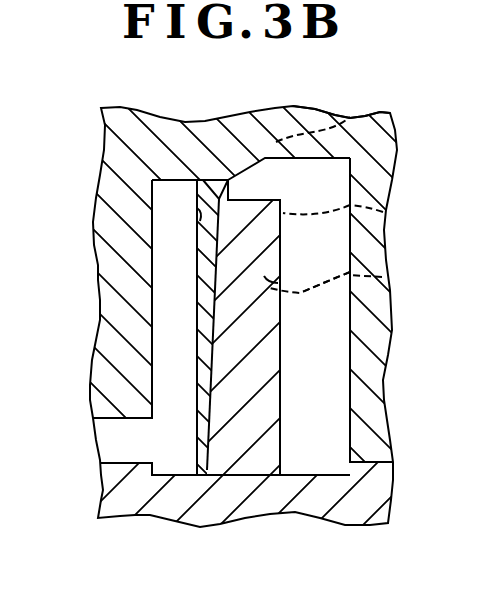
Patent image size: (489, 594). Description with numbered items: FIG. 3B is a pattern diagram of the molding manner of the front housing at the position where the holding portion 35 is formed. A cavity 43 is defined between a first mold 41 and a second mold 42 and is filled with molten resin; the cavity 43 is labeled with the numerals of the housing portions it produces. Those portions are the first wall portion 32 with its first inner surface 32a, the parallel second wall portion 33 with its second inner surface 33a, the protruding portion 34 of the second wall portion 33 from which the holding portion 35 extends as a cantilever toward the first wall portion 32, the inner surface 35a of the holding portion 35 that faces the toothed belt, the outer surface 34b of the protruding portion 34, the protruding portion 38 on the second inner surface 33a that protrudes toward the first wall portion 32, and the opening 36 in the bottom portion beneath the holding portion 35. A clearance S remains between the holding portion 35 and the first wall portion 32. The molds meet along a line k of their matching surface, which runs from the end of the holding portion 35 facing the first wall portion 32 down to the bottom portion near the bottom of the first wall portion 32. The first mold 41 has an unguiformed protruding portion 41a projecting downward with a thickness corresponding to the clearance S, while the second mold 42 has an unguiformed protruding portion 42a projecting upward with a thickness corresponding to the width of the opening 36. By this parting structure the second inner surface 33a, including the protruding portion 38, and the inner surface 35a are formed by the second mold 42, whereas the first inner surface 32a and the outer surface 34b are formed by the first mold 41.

The first wall portion 32 is at (125, 397).
The first inner surface 32a is at (197, 208).
The second wall portion 33 is at (383, 344).
The second inner surface 33a is at (382, 277).
The protruding portion 38 is at (379, 300).
The protruding portion 34 is at (350, 117).
The outer surface 34b is at (296, 108).
The holding portion 35 is at (234, 163).
The inner surface 35a is at (383, 212).
The opening 36 is at (206, 476).
The first mold 41 is at (105, 251).
The unguiformed protruding portion 41a is at (215, 314).
The second mold 42 is at (112, 472).
The unguiformed protruding portion 42a is at (204, 284).
The cavity 43 is at (332, 427).
The clearance S is at (222, 180).
The line of matching surface k is at (203, 346).